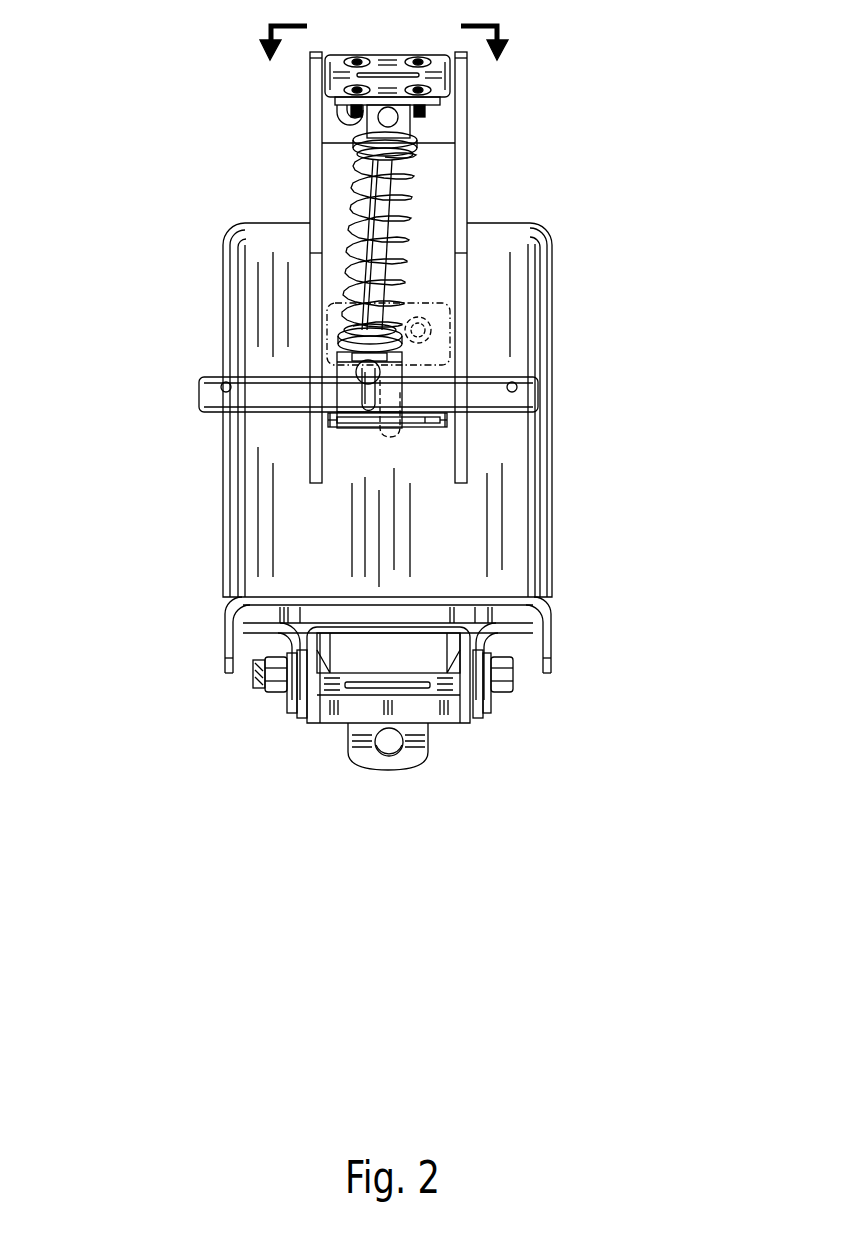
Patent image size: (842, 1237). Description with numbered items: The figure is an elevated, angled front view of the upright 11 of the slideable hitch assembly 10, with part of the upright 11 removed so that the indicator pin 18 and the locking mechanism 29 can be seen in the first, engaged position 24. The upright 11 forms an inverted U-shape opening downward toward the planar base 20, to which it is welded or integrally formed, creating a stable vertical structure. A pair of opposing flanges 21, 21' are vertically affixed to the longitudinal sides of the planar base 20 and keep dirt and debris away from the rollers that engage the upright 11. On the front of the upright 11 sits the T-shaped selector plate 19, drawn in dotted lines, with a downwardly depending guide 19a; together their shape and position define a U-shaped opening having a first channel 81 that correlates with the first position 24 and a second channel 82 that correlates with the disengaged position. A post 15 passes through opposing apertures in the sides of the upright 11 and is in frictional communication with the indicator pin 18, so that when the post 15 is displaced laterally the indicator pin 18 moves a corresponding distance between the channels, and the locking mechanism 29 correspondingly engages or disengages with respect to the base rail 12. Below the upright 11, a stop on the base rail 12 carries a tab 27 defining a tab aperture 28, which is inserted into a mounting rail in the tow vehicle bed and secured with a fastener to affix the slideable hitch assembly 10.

The slideable hitch assembly 10 is at (99, 72).
The upright 11 is at (318, 143).
The base rail 12 is at (468, 700).
The post 15 is at (210, 393).
The indicator pin 18 is at (371, 428).
The selector plate 19 is at (433, 329).
The guide 19a is at (378, 393).
The planar base 20 is at (497, 237).
The flange 21 is at (228, 648).
The flange 21' is at (549, 648).
The first position 24 is at (343, 452).
The tab 27 is at (358, 760).
The tab aperture 28 is at (392, 755).
The locking mechanism 29 is at (425, 186).
The first channel 81 is at (335, 440).
The second channel 82 is at (435, 438).